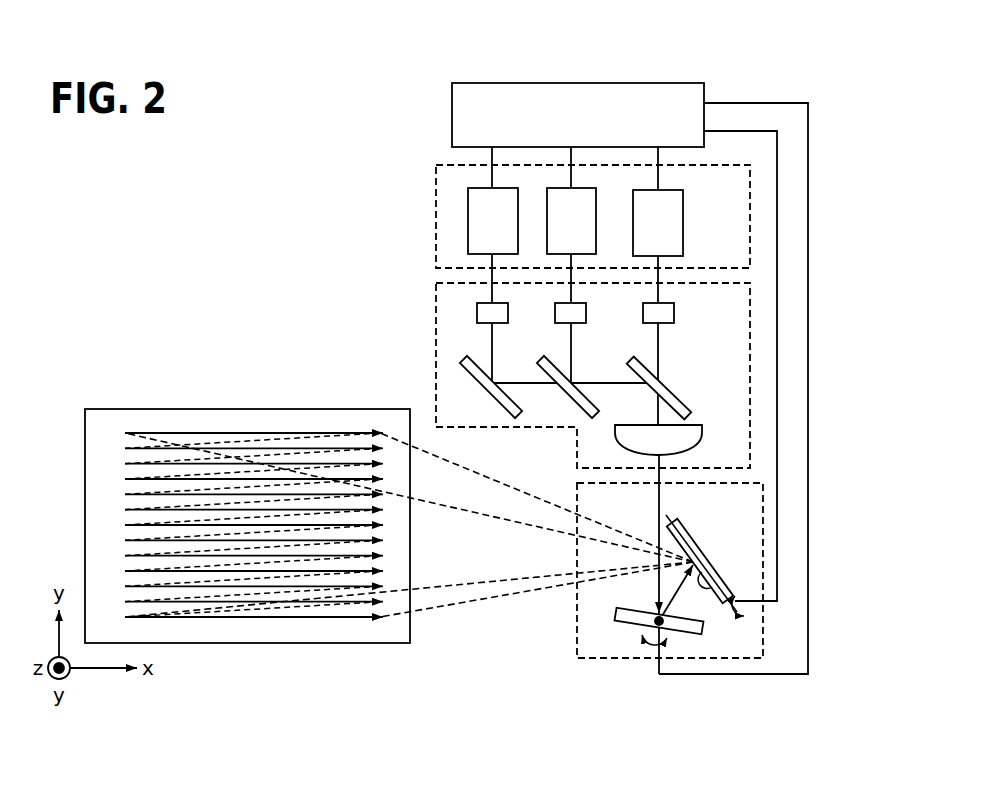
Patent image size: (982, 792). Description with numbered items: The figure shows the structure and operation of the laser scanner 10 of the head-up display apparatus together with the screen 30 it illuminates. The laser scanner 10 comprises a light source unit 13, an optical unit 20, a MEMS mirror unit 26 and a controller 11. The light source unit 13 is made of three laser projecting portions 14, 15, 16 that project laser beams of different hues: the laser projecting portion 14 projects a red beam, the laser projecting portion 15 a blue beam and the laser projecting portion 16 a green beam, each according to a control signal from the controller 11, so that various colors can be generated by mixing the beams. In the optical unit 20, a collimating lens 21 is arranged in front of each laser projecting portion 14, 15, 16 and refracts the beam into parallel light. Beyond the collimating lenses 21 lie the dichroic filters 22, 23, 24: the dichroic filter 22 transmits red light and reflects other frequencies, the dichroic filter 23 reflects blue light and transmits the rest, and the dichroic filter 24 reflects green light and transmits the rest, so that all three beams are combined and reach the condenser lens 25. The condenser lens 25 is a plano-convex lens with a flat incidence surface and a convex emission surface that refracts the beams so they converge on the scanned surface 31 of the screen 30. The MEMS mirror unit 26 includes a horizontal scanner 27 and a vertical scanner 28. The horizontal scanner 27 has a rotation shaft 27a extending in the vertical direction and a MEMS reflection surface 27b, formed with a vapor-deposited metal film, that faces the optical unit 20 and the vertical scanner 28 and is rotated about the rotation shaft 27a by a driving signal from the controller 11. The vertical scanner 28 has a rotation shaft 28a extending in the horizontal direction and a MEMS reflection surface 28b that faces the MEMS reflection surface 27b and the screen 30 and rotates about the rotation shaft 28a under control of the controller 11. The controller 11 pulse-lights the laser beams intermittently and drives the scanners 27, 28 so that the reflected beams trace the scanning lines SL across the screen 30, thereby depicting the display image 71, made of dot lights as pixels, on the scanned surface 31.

The laser scanner 10 is at (383, 112).
The controller 11 is at (665, 83).
The light source unit 13 is at (437, 180).
The laser projecting portion 14 is at (683, 222).
The laser projecting portion 15 is at (596, 222).
The laser projecting portion 16 is at (518, 222).
The optical unit 20 is at (437, 310).
The collimating lens 21 is at (508, 314).
The dichroic filter 22 is at (673, 393).
The dichroic filter 23 is at (585, 395).
The dichroic filter 24 is at (508, 395).
The condenser lens 25 is at (702, 433).
The MEMS mirror unit 26 is at (763, 658).
The horizontal scanner 27 is at (615, 613).
The rotation shaft 27a is at (645, 640).
The MEMS reflection surface 27b is at (690, 633).
The vertical scanner 28 is at (684, 529).
The rotation shaft 28a is at (663, 517).
The MEMS reflection surface 28b is at (703, 570).
The screen 30 is at (258, 409).
The scanned surface 31 is at (102, 522).
The display image 71 is at (108, 458).
The scanning lines SL is at (185, 432).